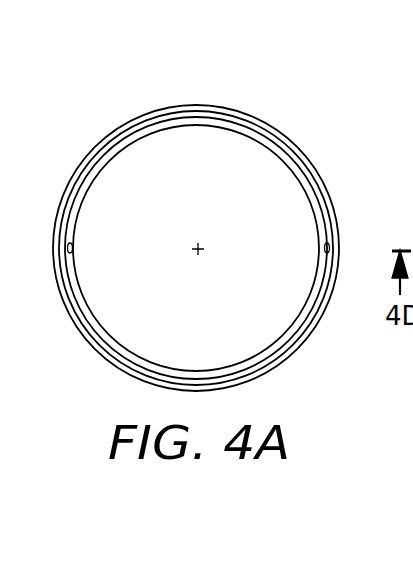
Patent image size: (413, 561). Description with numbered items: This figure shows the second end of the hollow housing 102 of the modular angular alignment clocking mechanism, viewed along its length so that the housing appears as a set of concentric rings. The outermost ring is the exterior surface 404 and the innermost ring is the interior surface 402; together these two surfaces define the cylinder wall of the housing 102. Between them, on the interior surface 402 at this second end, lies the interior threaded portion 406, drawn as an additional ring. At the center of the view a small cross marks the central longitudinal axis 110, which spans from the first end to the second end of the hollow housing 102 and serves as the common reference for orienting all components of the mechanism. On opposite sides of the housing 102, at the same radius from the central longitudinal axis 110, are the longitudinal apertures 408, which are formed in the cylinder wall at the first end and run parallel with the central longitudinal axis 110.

The hollow housing 102 is at (223, 93).
The central longitudinal axis 110 is at (198, 244).
The interior surface 402 is at (130, 140).
The exterior surface 404 is at (148, 113).
The interior threaded portion 406 is at (317, 310).
The longitudinal apertures 408 is at (72, 247).